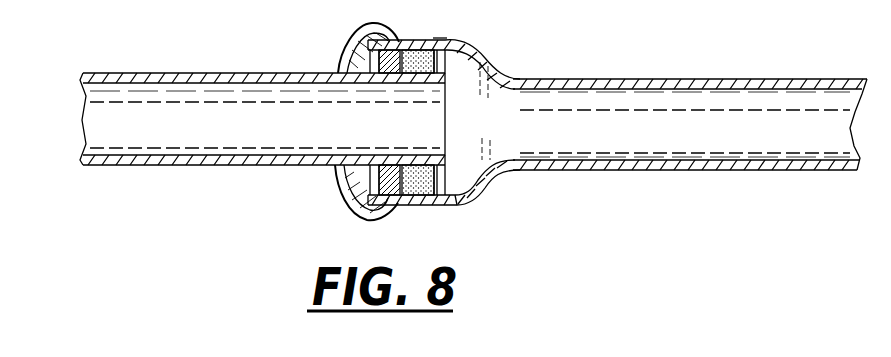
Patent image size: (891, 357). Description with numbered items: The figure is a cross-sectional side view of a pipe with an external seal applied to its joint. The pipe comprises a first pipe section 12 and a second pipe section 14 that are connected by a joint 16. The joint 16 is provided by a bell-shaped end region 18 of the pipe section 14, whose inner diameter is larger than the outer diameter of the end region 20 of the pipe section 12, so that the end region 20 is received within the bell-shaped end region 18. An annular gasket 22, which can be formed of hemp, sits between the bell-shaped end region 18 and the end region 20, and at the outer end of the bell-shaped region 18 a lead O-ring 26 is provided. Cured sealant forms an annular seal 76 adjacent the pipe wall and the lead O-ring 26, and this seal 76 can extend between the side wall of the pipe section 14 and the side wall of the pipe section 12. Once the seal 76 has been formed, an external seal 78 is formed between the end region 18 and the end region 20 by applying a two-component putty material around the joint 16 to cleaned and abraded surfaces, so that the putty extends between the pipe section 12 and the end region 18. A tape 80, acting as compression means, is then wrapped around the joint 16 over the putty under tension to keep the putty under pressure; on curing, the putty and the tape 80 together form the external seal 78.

The pipe section 12 is at (193, 76).
The pipe section 14 is at (740, 80).
The joint 16 is at (500, 195).
The bell-shaped end region 18 is at (448, 50).
The end region 20 is at (420, 155).
The annular gasket 22 is at (427, 47).
The lead O-ring 26 is at (378, 182).
The annular seal 76 is at (395, 68).
The external seal 78 is at (356, 182).
The tape 80 is at (370, 23).